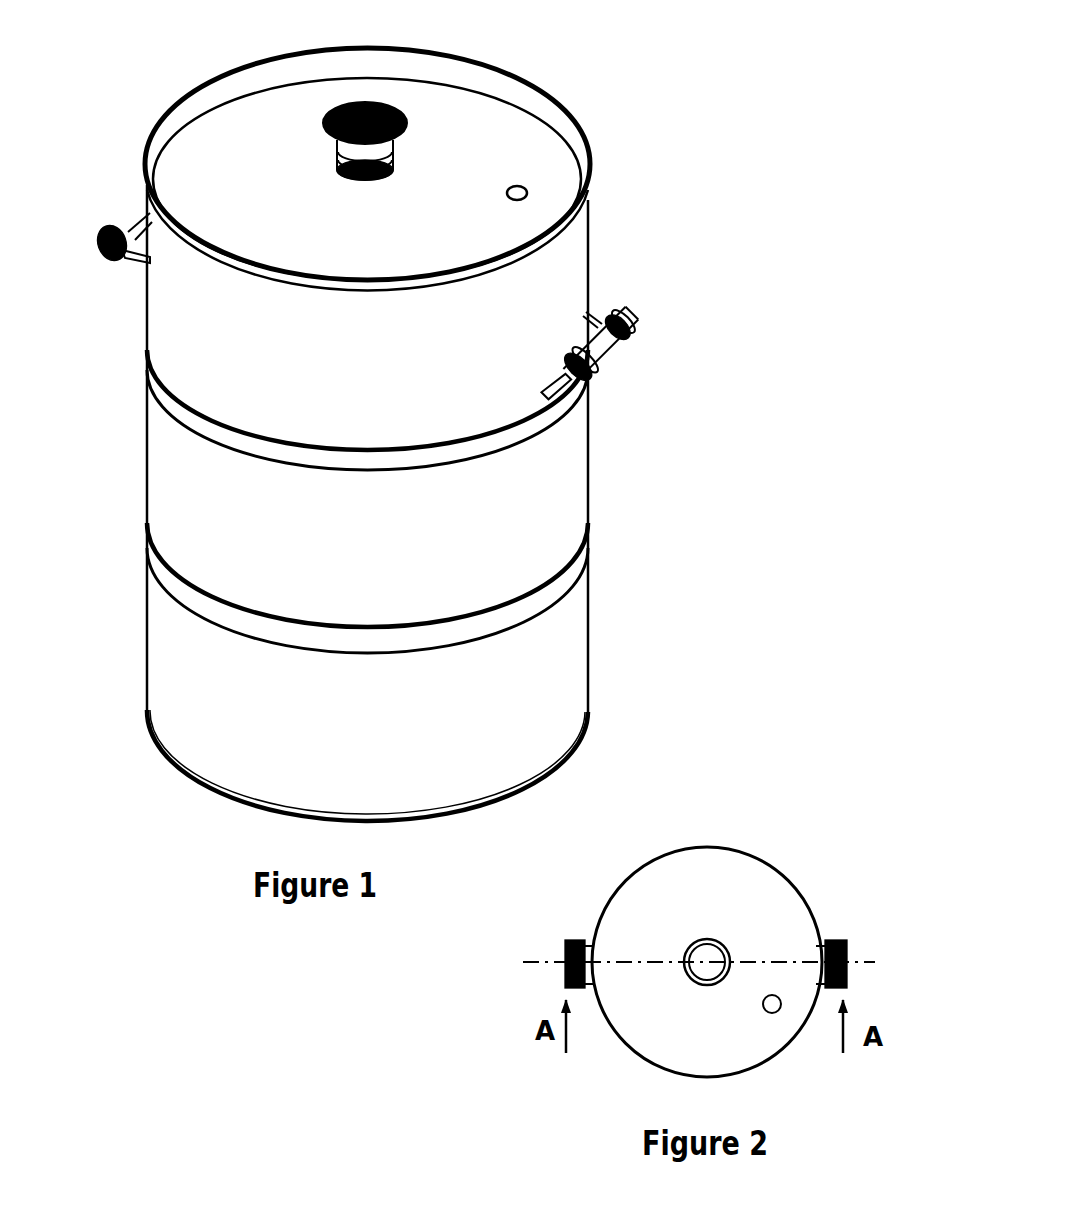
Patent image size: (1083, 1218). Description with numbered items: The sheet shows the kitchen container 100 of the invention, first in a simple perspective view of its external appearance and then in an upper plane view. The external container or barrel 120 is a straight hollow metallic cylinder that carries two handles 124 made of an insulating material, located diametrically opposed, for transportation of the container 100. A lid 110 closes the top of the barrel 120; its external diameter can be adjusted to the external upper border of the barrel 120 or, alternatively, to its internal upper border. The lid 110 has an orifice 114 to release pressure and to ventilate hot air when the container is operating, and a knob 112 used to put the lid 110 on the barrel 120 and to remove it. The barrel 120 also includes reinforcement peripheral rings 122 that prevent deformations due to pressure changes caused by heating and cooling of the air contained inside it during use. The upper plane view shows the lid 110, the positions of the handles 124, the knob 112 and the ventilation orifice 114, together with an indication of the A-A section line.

In FIG. 1, the container 100 is at (157, 37).
In FIG. 2, the container 100 is at (699, 912).
In FIG. 1, the lid 110 is at (419, 147).
In FIG. 1, the knob 112 is at (449, 97).
In FIG. 2, the knob 112 is at (793, 894).
In FIG. 1, the orifice 114 is at (616, 138).
In FIG. 2, the orifice 114 is at (848, 940).
In FIG. 1, the barrel 120 is at (418, 503).
In FIG. 1, the reinforcement peripheral rings 122 is at (309, 486).
In FIG. 1, the handles 124 is at (389, 281).
In FIG. 2, the handles 124 is at (611, 977).